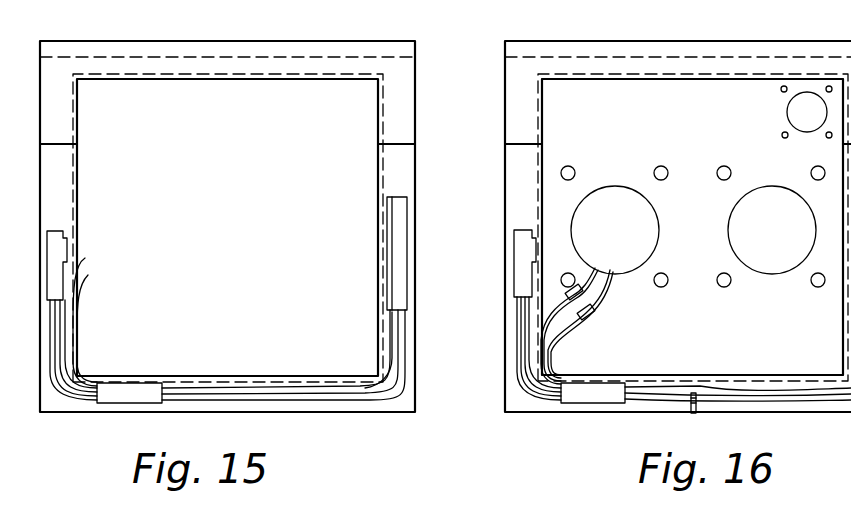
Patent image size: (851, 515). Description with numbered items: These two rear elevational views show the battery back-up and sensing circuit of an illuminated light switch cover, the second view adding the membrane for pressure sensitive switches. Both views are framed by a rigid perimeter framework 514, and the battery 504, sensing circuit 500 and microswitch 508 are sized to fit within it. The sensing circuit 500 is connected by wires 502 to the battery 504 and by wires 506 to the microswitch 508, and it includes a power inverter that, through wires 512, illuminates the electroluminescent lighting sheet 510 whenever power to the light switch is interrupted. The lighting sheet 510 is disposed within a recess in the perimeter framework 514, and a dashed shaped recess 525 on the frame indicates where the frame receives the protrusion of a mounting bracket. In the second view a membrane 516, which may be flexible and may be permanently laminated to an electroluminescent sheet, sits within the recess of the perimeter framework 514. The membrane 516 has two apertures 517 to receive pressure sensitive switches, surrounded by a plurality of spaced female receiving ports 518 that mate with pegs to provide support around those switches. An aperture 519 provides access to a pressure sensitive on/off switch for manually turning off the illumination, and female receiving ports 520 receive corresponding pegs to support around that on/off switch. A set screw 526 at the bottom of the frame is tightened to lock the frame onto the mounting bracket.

In FIG. 15, the sensing circuit 500 is at (130, 403).
In FIG. 16, the sensing circuit 500 is at (587, 403).
In FIG. 15, the wires 502 is at (278, 382).
In FIG. 16, the wires 502 is at (742, 384).
In FIG. 15, the battery 504 is at (396, 244).
In FIG. 16, the battery 504 is at (845, 212).
In FIG. 15, the wires 506 is at (60, 400).
In FIG. 16, the wires 506 is at (520, 380).
In FIG. 15, the microswitch 508 is at (60, 232).
In FIG. 16, the microswitch 508 is at (512, 264).
In FIG. 15, the electroluminescent lighting sheet 510 is at (245, 73).
In FIG. 16, the electroluminescent lighting sheet 510 is at (665, 73).
In FIG. 15, the wires 512 is at (86, 282).
In FIG. 15, the rigid perimeter framework 514 is at (398, 360).
In FIG. 16, the membrane 516 is at (690, 112).
In FIG. 16, the apertures 517 is at (615, 226).
In FIG. 16, the female receiving ports 518 is at (568, 166).
In FIG. 16, the aperture 519 is at (798, 110).
In FIG. 16, the female receiving ports 520 is at (829, 85).
In FIG. 15, the shaped recess 525 is at (170, 56).
In FIG. 16, the shaped recess 525 is at (578, 56).
In FIG. 16, the set screw 526 is at (690, 406).